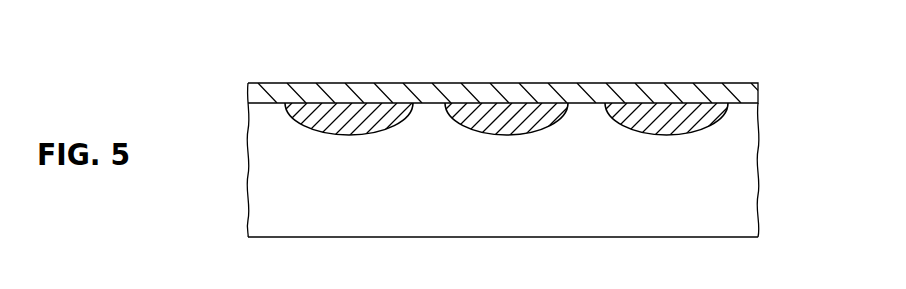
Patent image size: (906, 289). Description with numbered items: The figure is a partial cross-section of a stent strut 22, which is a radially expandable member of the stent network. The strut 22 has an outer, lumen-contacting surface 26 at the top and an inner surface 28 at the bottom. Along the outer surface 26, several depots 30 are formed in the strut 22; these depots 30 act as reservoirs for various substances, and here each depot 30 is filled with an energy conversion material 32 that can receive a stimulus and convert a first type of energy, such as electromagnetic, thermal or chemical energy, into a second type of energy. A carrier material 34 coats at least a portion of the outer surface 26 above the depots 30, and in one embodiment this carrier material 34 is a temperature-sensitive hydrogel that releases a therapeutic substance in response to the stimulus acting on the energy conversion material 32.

The strut 22 is at (228, 156).
The outer surface 26 is at (505, 74).
The inner surface 28 is at (508, 257).
The depot 30 is at (696, 113).
The energy conversion material 32 is at (347, 115).
The carrier material 34 is at (627, 92).